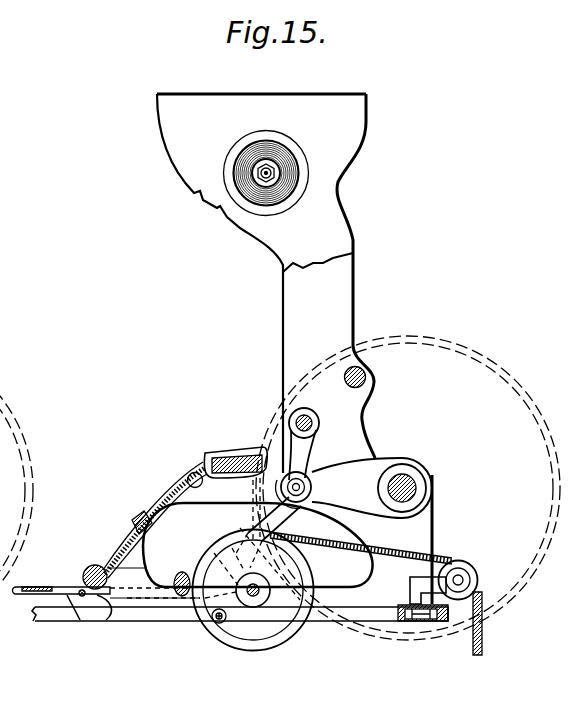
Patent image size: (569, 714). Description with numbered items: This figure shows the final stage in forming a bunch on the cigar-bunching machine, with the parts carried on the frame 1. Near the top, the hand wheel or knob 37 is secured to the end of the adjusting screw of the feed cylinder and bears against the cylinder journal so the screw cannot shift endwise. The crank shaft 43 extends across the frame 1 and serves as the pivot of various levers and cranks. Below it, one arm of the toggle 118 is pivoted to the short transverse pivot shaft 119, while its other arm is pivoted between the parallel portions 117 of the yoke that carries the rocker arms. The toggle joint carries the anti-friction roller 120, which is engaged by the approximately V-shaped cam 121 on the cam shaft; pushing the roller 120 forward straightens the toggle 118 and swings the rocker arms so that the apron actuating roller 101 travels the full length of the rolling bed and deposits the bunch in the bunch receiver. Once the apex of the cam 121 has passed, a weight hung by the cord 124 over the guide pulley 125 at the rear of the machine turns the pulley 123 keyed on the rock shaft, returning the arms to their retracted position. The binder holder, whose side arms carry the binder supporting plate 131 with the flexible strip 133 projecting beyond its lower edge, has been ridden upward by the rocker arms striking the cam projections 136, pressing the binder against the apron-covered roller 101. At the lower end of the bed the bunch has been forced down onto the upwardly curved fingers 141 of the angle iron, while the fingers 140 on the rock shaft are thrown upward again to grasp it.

The frame 1 is at (330, 218).
The hand wheel or knob 37 is at (290, 157).
The crank shaft 43 is at (351, 386).
The short transverse pivot shaft 119 is at (305, 416).
The V-shaped cam 121 is at (332, 483).
The anti-friction roller 120 is at (313, 500).
The toggle 118 is at (273, 522).
The cord 124 is at (373, 551).
The guide pulley 125 is at (468, 560).
The binder supporting plate 131 is at (62, 575).
The flexible strip 133 is at (58, 586).
The cam projections 136 is at (104, 622).
The upwardly curved fingers 140 is at (107, 570).
The upwardly curved fingers 141 is at (151, 536).
The apron actuating roller 101 is at (143, 558).
The parallel portions 117 is at (233, 581).
The pulley 123 is at (238, 622).